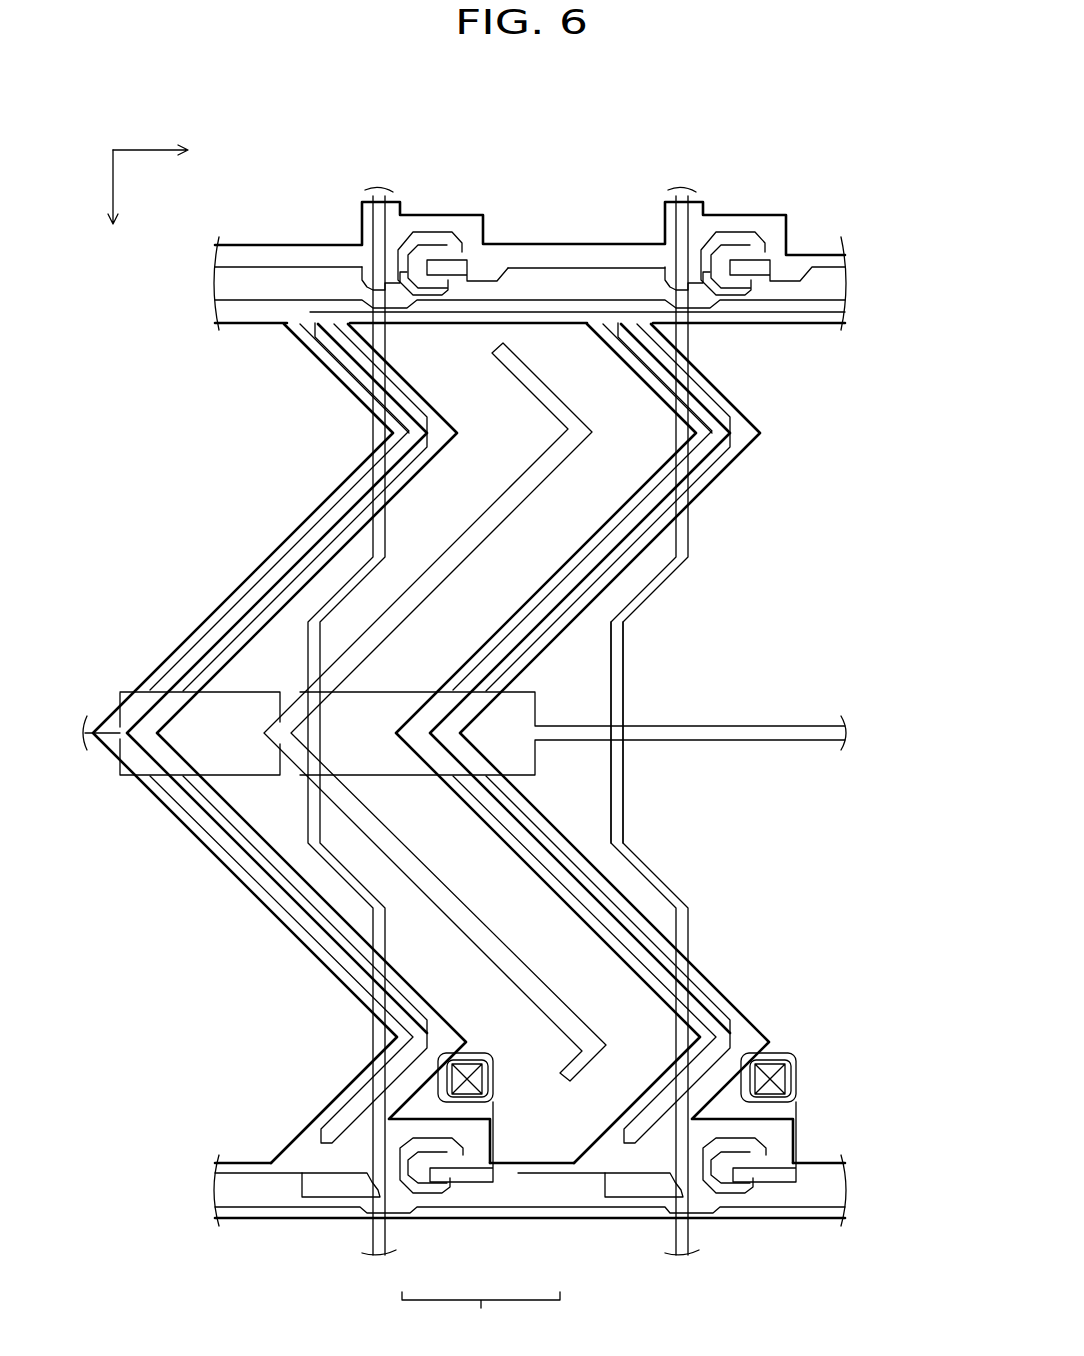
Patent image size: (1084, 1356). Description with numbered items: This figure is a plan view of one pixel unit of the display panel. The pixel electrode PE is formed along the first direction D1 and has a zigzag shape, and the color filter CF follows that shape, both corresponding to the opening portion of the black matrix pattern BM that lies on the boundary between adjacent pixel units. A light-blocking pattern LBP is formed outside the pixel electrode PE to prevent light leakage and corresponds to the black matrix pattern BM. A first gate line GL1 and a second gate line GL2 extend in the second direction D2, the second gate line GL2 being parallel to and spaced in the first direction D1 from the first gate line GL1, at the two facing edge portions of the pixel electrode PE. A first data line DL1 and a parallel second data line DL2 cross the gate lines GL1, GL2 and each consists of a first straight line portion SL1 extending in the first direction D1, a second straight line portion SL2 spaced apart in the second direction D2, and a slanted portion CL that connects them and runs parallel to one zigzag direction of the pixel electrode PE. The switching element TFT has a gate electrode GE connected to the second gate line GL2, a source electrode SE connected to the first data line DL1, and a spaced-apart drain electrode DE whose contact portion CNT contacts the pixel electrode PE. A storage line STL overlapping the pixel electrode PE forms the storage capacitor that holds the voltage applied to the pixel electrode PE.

The first direction D1 is at (113, 202).
The second direction D2 is at (170, 150).
The first data line DL1 is at (377, 200).
The second data line DL2 is at (680, 200).
The first gate line GL1 is at (830, 290).
The second gate line GL2 is at (830, 1197).
The light-blocking pattern LBP is at (730, 432).
The black matrix pattern BM is at (760, 452).
The first straight line portion SL1 is at (377, 538).
The slanted portion CL is at (340, 593).
The second straight line portion SL2 is at (310, 640).
The storage line STL is at (835, 733).
The color filter CF is at (508, 905).
The pixel electrode PE is at (608, 978).
The contact portion CNT is at (426, 1071).
The source electrode SE is at (422, 1195).
The drain electrode DE is at (474, 1183).
The gate electrode GE is at (463, 1160).
The switching element TFT is at (481, 1314).